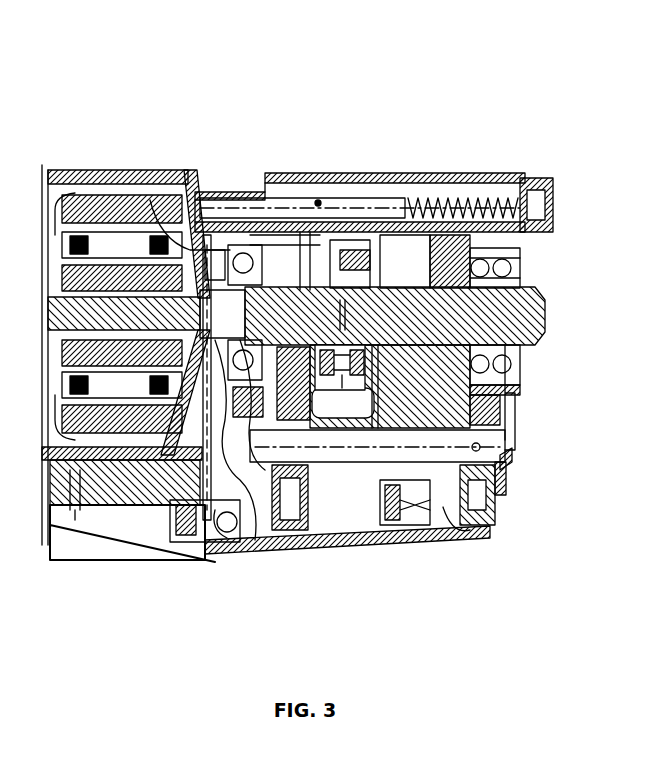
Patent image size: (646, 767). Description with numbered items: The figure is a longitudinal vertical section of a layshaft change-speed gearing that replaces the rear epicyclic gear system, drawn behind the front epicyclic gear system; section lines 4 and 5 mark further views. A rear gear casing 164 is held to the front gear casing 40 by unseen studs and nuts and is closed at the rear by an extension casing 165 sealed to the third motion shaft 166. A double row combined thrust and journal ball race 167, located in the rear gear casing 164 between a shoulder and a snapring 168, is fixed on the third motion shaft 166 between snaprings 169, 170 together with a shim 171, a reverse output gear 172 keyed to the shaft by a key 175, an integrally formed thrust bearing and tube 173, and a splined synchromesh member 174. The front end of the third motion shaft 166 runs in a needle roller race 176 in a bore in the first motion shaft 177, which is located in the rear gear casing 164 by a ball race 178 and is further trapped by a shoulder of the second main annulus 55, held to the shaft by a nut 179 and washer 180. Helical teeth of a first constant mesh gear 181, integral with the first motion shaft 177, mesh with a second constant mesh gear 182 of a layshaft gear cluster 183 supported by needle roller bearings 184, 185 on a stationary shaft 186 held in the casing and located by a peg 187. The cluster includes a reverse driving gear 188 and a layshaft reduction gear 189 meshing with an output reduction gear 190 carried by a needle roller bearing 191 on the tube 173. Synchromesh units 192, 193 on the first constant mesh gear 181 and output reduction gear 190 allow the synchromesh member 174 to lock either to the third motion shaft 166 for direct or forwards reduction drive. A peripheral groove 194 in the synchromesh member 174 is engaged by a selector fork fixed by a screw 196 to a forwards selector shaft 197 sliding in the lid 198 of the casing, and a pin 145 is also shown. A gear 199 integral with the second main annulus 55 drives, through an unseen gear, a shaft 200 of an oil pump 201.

The section line 4 is at (190, 185).
The section line 5 is at (290, 172).
The front gear casing 40 is at (222, 545).
The second main annulus 55 is at (138, 200).
The pin 145 is at (352, 177).
The rear gear casing 164 is at (437, 545).
The extension casing 165 is at (520, 445).
The third motion shaft 166 is at (528, 320).
The double row combined thrust and journal ball race 167 is at (520, 385).
The snapring 168 is at (520, 252).
The snapring 169 is at (525, 285).
The snapring 170 is at (300, 540).
The shim 171 is at (520, 360).
The reverse output gear 172 is at (520, 395).
The thrust bearing and tube 173 is at (487, 515).
The synchromesh member 174 is at (375, 400).
The key 175 is at (505, 282).
The needle roller race 176 is at (283, 173).
The first motion shaft 177 is at (247, 177).
The ball race 178 is at (238, 243).
The nut 179 is at (172, 177).
The washer 180 is at (210, 177).
The first constant mesh gear 181 is at (238, 548).
The second constant mesh gear 182 is at (290, 530).
The layshaft gear cluster 183 is at (345, 400).
The needle roller bearing 184 is at (450, 540).
The needle roller bearing 185 is at (290, 350).
The stationary shaft 186 is at (503, 480).
The peg 187 is at (508, 460).
The reverse driving gear 188 is at (470, 535).
The layshaft reduction gear 189 is at (405, 515).
The output reduction gear 190 is at (452, 183).
The needle roller bearing 191 is at (420, 177).
The synchromesh unit 192 is at (340, 175).
The synchromesh unit 193 is at (380, 175).
The peripheral groove 194 is at (342, 400).
The screw 196 is at (320, 200).
The forwards selector shaft 197 is at (302, 177).
The lid 198 is at (275, 177).
The gear 199 is at (152, 470).
The shaft 200 is at (237, 430).
The oil pump 201 is at (200, 520).